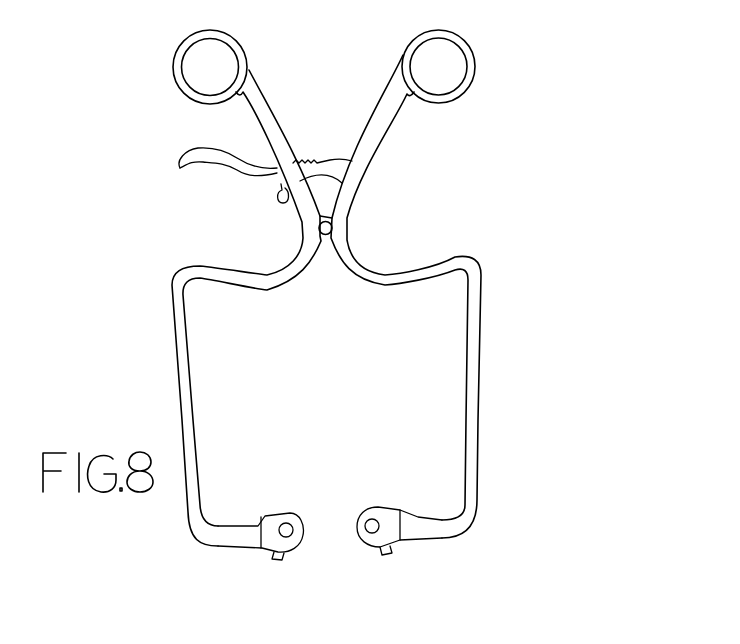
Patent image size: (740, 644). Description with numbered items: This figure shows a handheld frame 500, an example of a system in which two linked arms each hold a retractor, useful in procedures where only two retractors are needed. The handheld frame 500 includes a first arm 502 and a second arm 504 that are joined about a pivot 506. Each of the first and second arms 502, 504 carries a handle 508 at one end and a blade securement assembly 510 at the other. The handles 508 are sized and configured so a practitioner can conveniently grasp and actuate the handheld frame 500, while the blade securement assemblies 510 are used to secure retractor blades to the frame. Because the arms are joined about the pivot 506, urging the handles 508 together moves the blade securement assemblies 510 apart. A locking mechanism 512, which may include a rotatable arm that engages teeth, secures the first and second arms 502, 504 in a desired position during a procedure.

The handheld frame 500 is at (455, 191).
The first arm 502 is at (172, 303).
The second arm 504 is at (482, 283).
The pivot 506 is at (324, 236).
The handles 508 is at (176, 80).
The blade securement assemblies 510 is at (262, 548).
The locking mechanism 512 is at (282, 184).